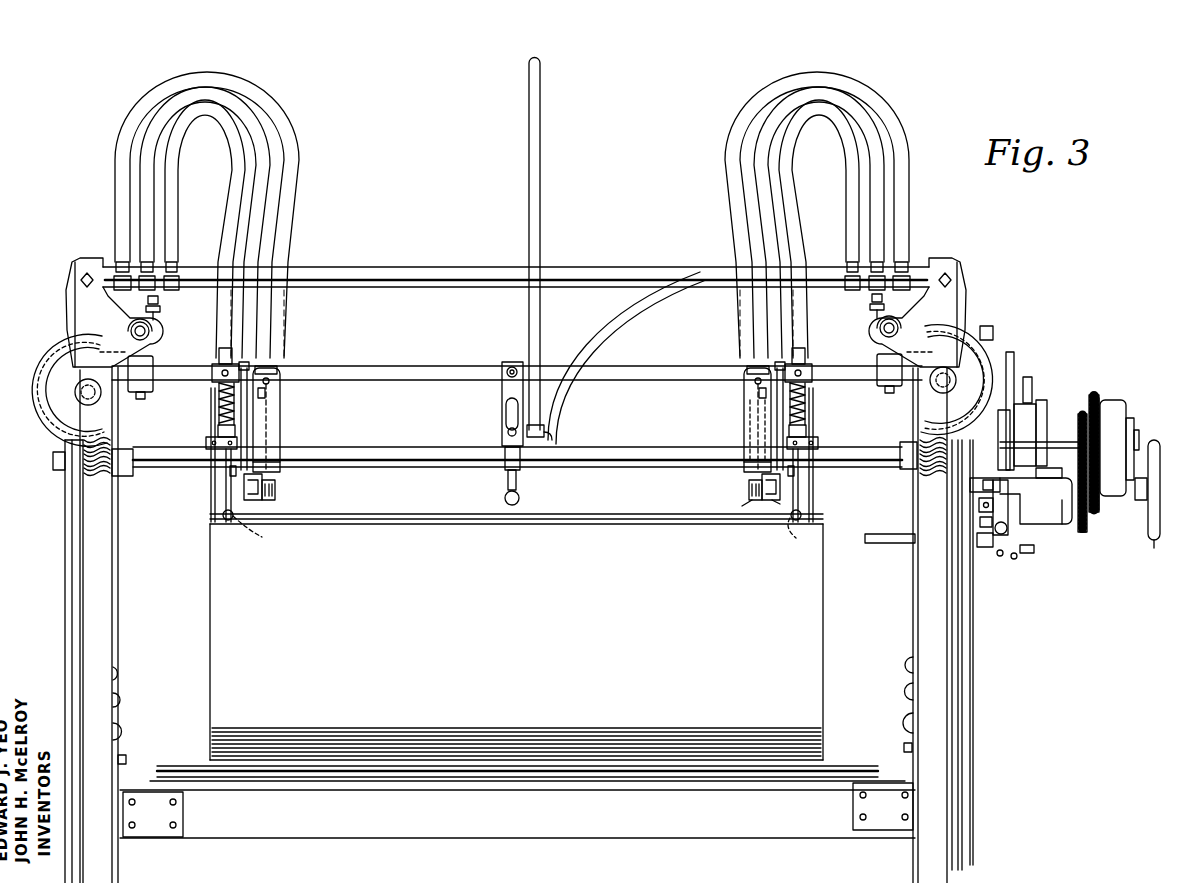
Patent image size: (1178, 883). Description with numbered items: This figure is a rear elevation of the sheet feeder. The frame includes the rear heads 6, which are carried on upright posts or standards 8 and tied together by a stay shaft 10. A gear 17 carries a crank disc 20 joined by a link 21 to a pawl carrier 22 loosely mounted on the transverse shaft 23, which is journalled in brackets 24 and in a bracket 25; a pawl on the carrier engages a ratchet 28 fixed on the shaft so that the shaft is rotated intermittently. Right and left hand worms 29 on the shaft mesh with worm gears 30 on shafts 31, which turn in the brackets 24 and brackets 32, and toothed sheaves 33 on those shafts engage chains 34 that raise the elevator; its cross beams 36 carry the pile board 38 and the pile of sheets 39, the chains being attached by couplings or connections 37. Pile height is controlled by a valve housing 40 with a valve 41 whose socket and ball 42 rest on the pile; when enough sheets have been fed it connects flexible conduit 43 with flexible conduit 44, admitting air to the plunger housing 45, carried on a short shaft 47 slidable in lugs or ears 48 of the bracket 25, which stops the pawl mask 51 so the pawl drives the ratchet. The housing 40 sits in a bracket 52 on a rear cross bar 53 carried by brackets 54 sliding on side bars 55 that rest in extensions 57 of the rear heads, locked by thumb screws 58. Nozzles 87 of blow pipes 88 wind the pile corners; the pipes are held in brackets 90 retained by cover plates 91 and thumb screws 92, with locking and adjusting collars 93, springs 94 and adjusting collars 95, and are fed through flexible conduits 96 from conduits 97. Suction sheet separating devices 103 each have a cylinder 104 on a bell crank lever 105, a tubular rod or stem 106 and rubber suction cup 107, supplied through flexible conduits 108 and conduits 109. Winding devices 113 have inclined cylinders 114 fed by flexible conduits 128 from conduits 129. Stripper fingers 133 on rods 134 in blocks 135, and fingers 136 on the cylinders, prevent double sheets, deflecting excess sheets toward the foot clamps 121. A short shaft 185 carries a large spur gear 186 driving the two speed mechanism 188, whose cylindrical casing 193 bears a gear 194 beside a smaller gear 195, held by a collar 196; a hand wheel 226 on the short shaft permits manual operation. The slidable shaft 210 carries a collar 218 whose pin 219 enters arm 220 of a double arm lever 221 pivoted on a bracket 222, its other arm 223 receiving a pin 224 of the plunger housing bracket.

The rear heads 6 is at (80, 316).
The upright posts or standards 8 is at (100, 588).
The stay shaft 10 is at (398, 269).
The gear 17 is at (990, 326).
The crank disc 20 is at (1014, 358).
The link 21 is at (1032, 384).
The pawl carrier 22 is at (1042, 428).
The shaft 23 is at (610, 425).
The brackets 24 is at (122, 478).
The bracket 25 is at (1048, 524).
The ratchet 28 is at (1050, 446).
The worms 29 is at (90, 478).
The worm gears 30 is at (138, 406).
The shafts 31 is at (110, 345).
The brackets 32 is at (66, 296).
The toothed sheaves 33 is at (48, 382).
The chains 34 is at (116, 696).
The cross beams 36 is at (504, 838).
The couplings or connections 37 is at (124, 764).
The pile board 38 is at (508, 759).
The pile of sheets 39 is at (516, 637).
The valve housing 40 is at (504, 466).
The valve 41 is at (518, 484).
The socket and ball 42 is at (504, 496).
The flexible conduit 43 is at (534, 178).
The flexible conduit 44 is at (622, 300).
The plunger housing 45 is at (1016, 500).
The short shaft 47 is at (1050, 478).
The lugs or ears 48 is at (950, 483).
The pawl mask 51 is at (1032, 412).
The bracket 52 is at (504, 396).
The rear cross bar 53 is at (470, 345).
The brackets 54 is at (136, 376).
The side bars 55 is at (130, 331).
The extensions 57 is at (154, 330).
The thumb screws 58 is at (156, 312).
The nozzles 87 is at (524, 534).
The blow pipes 88 is at (224, 522).
The brackets 90 is at (218, 351).
The cover plates 91 is at (278, 396).
The thumb screws 92 is at (278, 364).
The locking and adjusting collars 93 is at (820, 382).
The springs 94 is at (218, 404).
The adjusting collars 95 is at (218, 430).
The flexible conduits 96 is at (248, 130).
The conduits 97 is at (114, 297).
The suction sheet separating devices 103 is at (752, 430).
The cylinder 104 is at (276, 472).
The bell crank lever 105 is at (276, 344).
The tubular rod or stem 106 is at (238, 514).
The rubber suction cup 107 is at (762, 500).
The flexible conduits 108 is at (252, 208).
The conduits 109 is at (180, 276).
The winding devices 113 is at (290, 419).
The inclined cylinder 114 is at (276, 442).
The foot clamps 121 is at (274, 494).
The flexible conduits 128 is at (288, 165).
The conduits 129 is at (150, 302).
The stripper fingers 133 is at (210, 514).
The rods 134 is at (210, 486).
The blocks 135 is at (206, 445).
The fingers 136 is at (230, 474).
The short shaft 185 is at (1136, 500).
The large spur gear 186 is at (1084, 532).
The two speed mechanism 188 is at (1118, 400).
The cylindrical casing 193 is at (1102, 396).
The gear 194 is at (1082, 414).
The smaller gear 195 is at (1090, 396).
The collar 196 is at (1136, 430).
The shaft 210 is at (896, 543).
The collar 218 is at (980, 548).
The pin 219 is at (1000, 558).
The arm 220 is at (1016, 558).
The double arm lever 221 is at (1036, 552).
The bracket 222 is at (978, 508).
The arm 223 is at (980, 524).
The pin 224 is at (982, 486).
The hand wheel 226 is at (1150, 542).